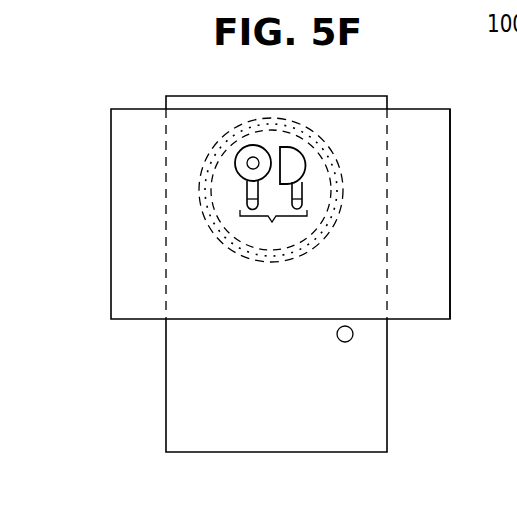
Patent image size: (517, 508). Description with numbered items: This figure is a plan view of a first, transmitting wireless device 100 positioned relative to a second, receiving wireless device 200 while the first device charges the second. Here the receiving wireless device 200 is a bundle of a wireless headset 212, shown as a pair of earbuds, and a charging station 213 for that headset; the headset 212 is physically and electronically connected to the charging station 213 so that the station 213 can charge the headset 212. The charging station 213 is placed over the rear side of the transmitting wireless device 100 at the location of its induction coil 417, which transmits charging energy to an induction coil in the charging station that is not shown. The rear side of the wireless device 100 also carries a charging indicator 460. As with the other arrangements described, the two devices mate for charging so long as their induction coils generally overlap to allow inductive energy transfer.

The wireless device 100 is at (166, 437).
The receiving wireless device 200 is at (112, 108).
The wireless headset 212 is at (271, 196).
The charging station 213 is at (438, 241).
The induction coil 417 is at (307, 131).
The charging indicator 460 is at (337, 334).